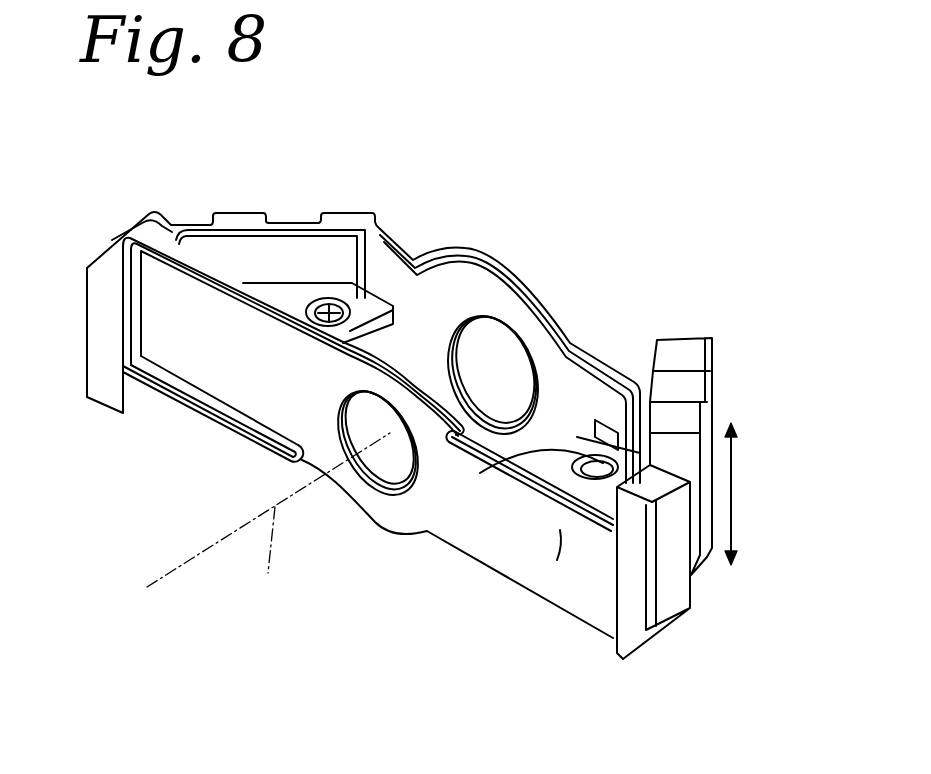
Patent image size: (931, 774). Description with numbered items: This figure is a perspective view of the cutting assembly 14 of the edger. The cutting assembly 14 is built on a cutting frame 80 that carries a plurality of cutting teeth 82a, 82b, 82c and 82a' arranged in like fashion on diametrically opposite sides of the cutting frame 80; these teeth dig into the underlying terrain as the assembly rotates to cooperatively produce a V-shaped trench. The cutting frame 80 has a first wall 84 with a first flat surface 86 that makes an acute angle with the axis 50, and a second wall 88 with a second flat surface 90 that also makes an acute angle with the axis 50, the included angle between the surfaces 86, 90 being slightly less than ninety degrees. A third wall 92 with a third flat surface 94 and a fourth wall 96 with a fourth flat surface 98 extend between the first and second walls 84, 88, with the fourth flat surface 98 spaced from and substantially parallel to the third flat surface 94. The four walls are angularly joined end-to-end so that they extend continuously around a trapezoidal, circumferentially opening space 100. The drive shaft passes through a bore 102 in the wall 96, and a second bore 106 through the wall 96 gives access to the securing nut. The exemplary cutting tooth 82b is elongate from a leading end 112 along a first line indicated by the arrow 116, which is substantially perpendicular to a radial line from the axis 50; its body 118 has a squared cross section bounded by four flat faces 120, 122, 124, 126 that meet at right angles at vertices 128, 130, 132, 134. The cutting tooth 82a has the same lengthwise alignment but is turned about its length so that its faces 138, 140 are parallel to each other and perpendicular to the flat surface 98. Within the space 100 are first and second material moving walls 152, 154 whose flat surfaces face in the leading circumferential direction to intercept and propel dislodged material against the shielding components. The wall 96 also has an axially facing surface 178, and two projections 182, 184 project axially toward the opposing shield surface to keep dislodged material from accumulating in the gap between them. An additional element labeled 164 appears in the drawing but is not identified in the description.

The cutting assembly 14 is at (590, 298).
The axis 50 is at (268, 518).
The cutting frame 80 is at (500, 537).
The cutting tooth 82a is at (664, 616).
The cutting tooth 82a' is at (60, 364).
The cutting tooth 82b is at (667, 462).
The cutting tooth 82c is at (690, 395).
The first wall 84 is at (638, 432).
The first flat surface 86 is at (560, 445).
The second wall 88 is at (237, 250).
The second flat surface 90 is at (270, 253).
The third wall 92 is at (453, 300).
The third flat surface 94 is at (423, 303).
The fourth wall 96 is at (517, 543).
The fourth flat surface 98 is at (287, 307).
The trapezoidal circumferentially opening space 100 is at (523, 317).
The bore 102 is at (408, 437).
The bore 106 is at (477, 377).
The leading end 112 is at (683, 425).
The arrow (first line) 116 is at (733, 487).
The body 118 is at (675, 455).
The flat face 120 is at (662, 372).
The flat face 122 is at (690, 425).
The flat face 124 is at (692, 458).
The flat face 126 is at (663, 445).
The vertex 128 is at (690, 350).
The vertex 130 is at (692, 440).
The vertex 132 is at (706, 550).
The vertex 134 is at (585, 477).
The face 138 is at (565, 522).
The face 140 is at (680, 577).
The first material moving wall 152 is at (363, 310).
The second material moving wall 154 is at (485, 470).
The side wall 164 is at (312, 418).
The axially facing surface 178 is at (203, 343).
The projection 182 is at (217, 417).
The projection 184 is at (502, 445).